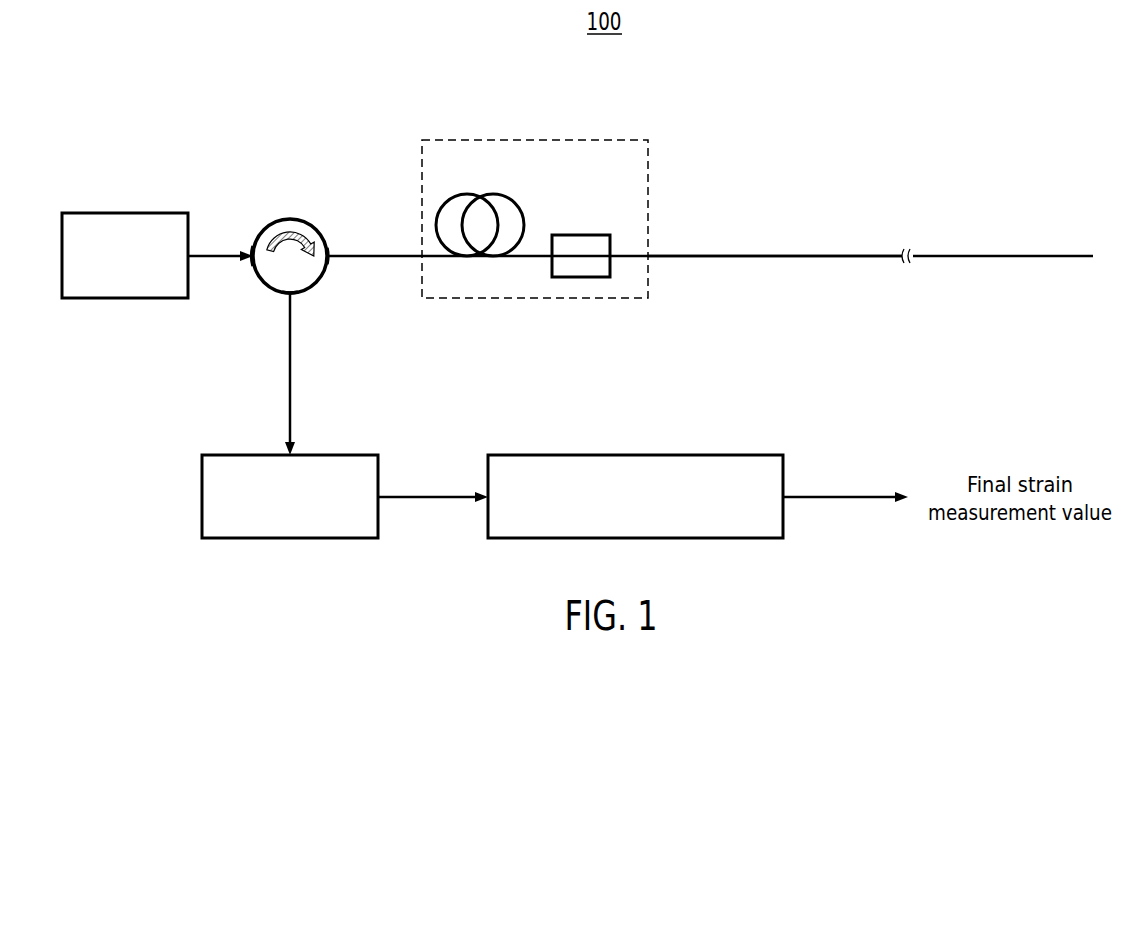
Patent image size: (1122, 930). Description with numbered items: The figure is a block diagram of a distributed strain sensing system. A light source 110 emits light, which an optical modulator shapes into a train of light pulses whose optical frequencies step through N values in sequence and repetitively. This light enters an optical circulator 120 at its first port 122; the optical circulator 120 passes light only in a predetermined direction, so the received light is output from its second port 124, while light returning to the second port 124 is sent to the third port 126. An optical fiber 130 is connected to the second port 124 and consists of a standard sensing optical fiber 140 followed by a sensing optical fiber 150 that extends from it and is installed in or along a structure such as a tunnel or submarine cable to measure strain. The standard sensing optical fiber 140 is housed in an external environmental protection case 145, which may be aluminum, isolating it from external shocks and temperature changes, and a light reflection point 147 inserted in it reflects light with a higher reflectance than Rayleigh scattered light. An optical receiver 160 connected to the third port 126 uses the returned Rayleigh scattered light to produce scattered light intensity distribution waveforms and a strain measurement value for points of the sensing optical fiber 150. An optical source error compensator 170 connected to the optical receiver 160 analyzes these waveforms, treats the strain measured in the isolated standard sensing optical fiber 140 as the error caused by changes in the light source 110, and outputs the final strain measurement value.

The light source 110 is at (127, 213).
The optical circulator 120 is at (290, 219).
The first port 122 is at (253, 246).
The second port 124 is at (327, 249).
The third port 126 is at (300, 292).
The optical fiber 130 is at (722, 216).
The standard sensing optical fiber 140 is at (493, 194).
The external environmental protection case 145 is at (535, 140).
The light reflection point 147 is at (582, 235).
The sensing optical fiber 150 is at (798, 256).
The optical receiver 160 is at (320, 455).
The optical source error compensator 170 is at (636, 455).